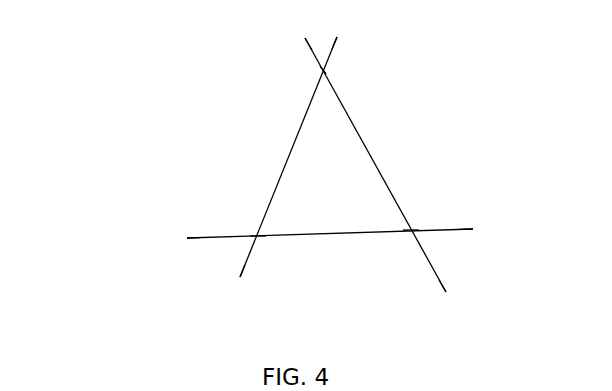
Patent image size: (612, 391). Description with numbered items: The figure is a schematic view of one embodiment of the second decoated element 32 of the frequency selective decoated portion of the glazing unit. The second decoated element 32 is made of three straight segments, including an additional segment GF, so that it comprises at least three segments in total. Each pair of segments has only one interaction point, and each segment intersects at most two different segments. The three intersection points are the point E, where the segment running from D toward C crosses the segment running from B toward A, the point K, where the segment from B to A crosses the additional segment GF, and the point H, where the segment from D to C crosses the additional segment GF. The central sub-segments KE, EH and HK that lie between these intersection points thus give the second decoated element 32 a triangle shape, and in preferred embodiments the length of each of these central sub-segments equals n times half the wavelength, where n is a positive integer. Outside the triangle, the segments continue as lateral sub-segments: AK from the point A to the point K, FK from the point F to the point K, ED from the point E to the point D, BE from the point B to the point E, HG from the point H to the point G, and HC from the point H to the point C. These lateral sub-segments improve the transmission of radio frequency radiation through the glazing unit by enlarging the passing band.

The second decoated element 32 is at (150, 44).
The point A is at (236, 287).
The point B is at (346, 35).
The point C is at (453, 306).
The point D is at (297, 32).
The intersection point E is at (326, 98).
The point F is at (180, 252).
The point G is at (484, 240).
The intersection point H is at (414, 218).
The intersection point K is at (274, 221).